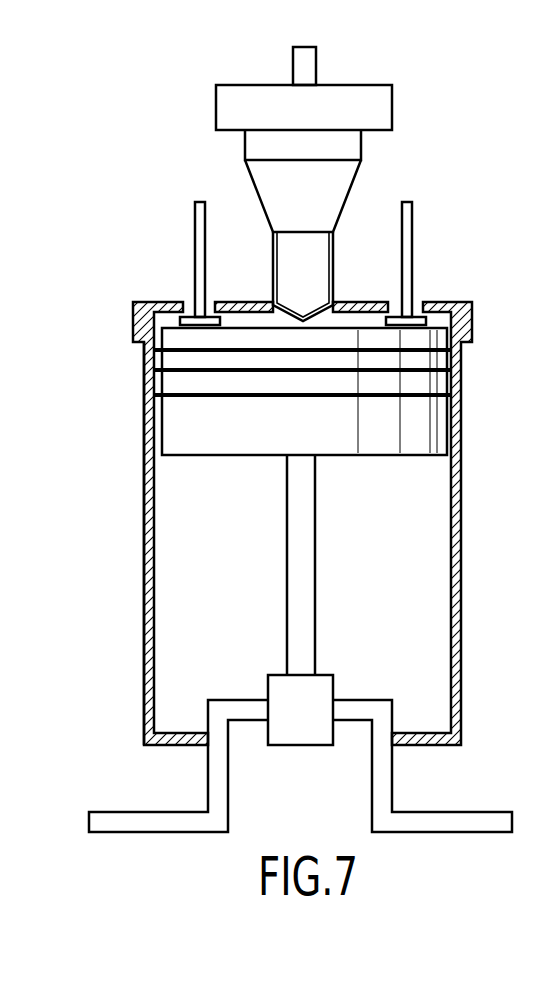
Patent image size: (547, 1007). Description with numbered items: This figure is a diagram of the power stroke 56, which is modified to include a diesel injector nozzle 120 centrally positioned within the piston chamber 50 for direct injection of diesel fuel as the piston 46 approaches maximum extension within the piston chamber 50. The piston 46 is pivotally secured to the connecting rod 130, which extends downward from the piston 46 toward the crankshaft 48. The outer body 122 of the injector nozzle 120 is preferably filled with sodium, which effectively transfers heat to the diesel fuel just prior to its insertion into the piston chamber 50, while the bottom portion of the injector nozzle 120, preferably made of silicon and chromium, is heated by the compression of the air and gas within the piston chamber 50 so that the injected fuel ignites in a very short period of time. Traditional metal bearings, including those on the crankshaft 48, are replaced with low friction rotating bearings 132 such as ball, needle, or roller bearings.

The diesel injector nozzle 120 is at (408, 100).
The outer body 122 is at (305, 322).
The piston 46 is at (432, 432).
The connecting rod 130 is at (316, 538).
The piston chamber 50 is at (415, 608).
The power stroke 56 is at (113, 711).
The low friction rotating bearings 132 is at (333, 686).
The crankshaft 48 is at (472, 812).